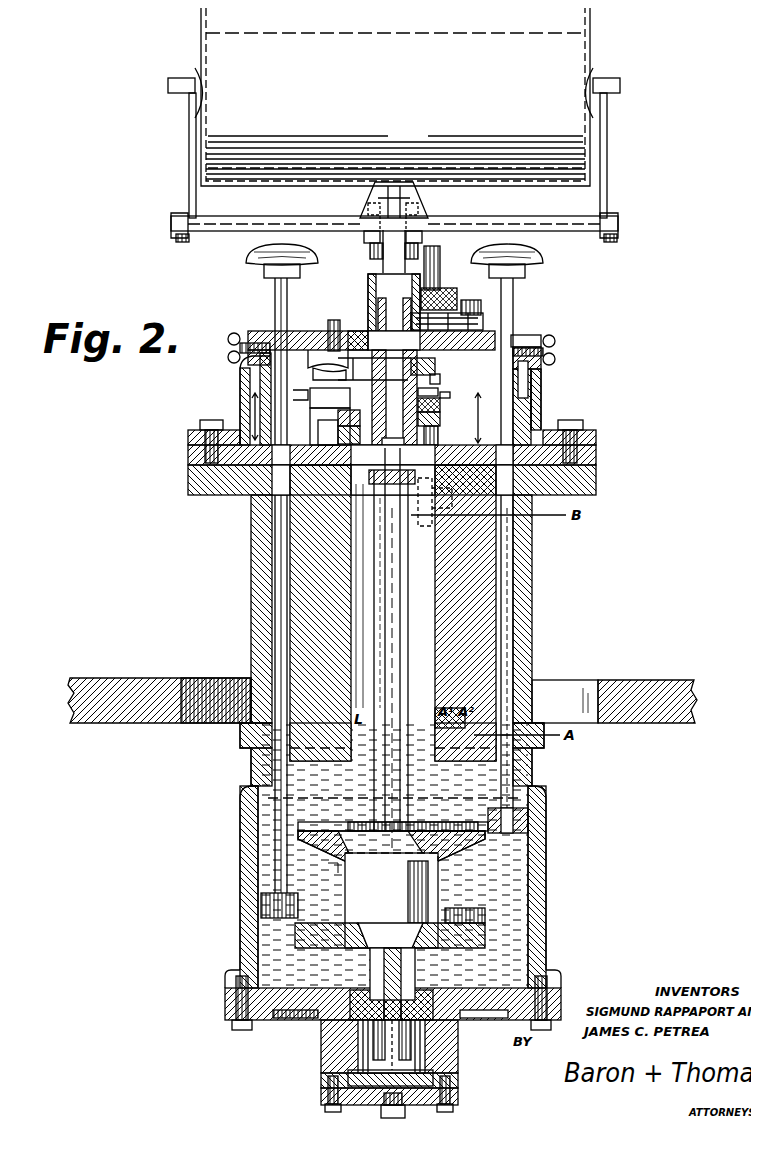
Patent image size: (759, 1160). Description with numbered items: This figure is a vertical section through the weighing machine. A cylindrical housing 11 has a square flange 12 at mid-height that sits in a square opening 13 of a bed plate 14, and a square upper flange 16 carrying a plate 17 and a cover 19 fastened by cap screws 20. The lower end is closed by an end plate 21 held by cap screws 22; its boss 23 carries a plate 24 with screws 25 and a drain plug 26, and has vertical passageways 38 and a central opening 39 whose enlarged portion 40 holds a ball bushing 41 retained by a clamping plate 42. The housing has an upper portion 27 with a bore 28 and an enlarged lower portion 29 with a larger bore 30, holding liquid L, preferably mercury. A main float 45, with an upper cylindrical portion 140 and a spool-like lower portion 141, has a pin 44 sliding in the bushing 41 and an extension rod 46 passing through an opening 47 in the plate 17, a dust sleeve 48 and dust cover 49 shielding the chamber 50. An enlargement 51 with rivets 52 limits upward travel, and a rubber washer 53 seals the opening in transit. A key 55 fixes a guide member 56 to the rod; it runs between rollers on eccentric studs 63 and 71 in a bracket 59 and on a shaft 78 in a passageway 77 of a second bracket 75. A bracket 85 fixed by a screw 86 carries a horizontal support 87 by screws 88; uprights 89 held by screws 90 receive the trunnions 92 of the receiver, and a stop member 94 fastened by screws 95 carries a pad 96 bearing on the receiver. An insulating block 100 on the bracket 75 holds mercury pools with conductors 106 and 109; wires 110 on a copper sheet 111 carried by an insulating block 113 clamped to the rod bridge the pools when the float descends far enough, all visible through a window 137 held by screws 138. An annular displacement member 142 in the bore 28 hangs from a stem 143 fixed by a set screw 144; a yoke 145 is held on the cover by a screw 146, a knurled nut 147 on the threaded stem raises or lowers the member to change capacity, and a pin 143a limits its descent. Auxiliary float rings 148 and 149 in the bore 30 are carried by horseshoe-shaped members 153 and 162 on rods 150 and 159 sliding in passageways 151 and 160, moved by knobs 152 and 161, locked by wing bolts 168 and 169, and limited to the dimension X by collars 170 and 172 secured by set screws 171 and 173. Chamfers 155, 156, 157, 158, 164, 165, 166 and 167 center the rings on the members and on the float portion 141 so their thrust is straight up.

The housing 11 is at (526, 566).
The flange 12 is at (232, 736).
The opening 13 is at (190, 672).
The bed plate 14 is at (660, 674).
The upper flange 16 is at (180, 476).
The plate 17 is at (588, 450).
The cover 19 is at (534, 382).
The cap screws 20 is at (600, 402).
The end plate 21 is at (217, 1000).
The cap screws 22 is at (540, 982).
The cylindrical boss 23 is at (313, 1073).
The plate 24 is at (313, 1088).
The screws 25 is at (318, 1100).
The drain plug 26 is at (374, 1104).
The upper portion 27 is at (246, 650).
The bore 28 is at (292, 780).
The lower portion 29 is at (538, 880).
The bore 30 is at (522, 910).
The vertical passageways 38 is at (355, 1046).
The central opening 39 is at (390, 1078).
The enlarged portion 40 is at (367, 1005).
The ball bushing 41 is at (417, 1005).
The clamping plate 42 is at (322, 1022).
The pin 44 is at (394, 990).
The main float 45 is at (354, 965).
The extension rod 46 is at (388, 520).
The opening 47 is at (423, 502).
The dust sleeve 48 is at (370, 305).
The dust cover 49 is at (360, 282).
The chamber 50 is at (516, 405).
The enlargement 51 is at (359, 596).
The rivets 52 is at (390, 599).
The rubber washer 53 is at (388, 445).
The key 55 is at (383, 397).
The guide member 56 is at (413, 397).
The bracket 59 is at (430, 430).
The studs 63 is at (432, 412).
The stud 71 is at (432, 398).
The second bracket 75 is at (318, 432).
The passageway 77 is at (338, 419).
The shaft 78 is at (342, 435).
The bracket 85 is at (406, 250).
The screw 86 is at (362, 248).
The horizontal support 87 is at (590, 228).
The screws 88 is at (356, 232).
The upright member 89 is at (181, 166).
The screw 90 is at (174, 234).
The trunnion 92 is at (180, 70).
The stop member 94 is at (406, 186).
The screws 95 is at (360, 195).
The pad 96 is at (387, 178).
The insulating block 100 is at (327, 424).
The conductor 106 is at (322, 346).
The conductor 109 is at (300, 342).
The wires 110 is at (330, 398).
The sheet copper 111 is at (348, 328).
The insulating block 113 is at (427, 360).
The transparent window 137 is at (258, 335).
The screws 138 is at (325, 312).
The upper cylindrical portion 140 is at (394, 672).
The lower spool portion 141 is at (420, 878).
The displacement member 142 is at (438, 710).
The stem 143 is at (432, 264).
The pin 143a is at (453, 374).
The set screw 144 is at (436, 498).
The yoke 145 is at (476, 316).
The screw 146 is at (480, 296).
The knurled nut 147 is at (446, 290).
The auxiliary float ring 148 is at (462, 852).
The auxiliary float ring 149 is at (470, 940).
The rod 150 is at (505, 650).
The passageway 151 is at (500, 612).
The knob 152 is at (516, 262).
The horseshoe-shaped member 153 is at (522, 818).
The chamfered corner 155 is at (472, 838).
The chamfered portion 156 is at (470, 816).
The beveled corner 157 is at (312, 852).
The beveled surface 158 is at (330, 866).
The second rod 159 is at (271, 610).
The passageway 160 is at (267, 574).
The knob 161 is at (256, 262).
The horseshoe-shaped member 162 is at (253, 904).
The beveled corner 164 is at (295, 938).
The complemental surface 165 is at (444, 904).
The beveled corner 166 is at (356, 905).
The beveled surface 167 is at (410, 942).
The wing bolt 168 is at (548, 334).
The wing bolt 169 is at (222, 347).
The collar 170 is at (430, 384).
The set screw 171 is at (459, 392).
The collar 172 is at (236, 380).
The set screw 173 is at (306, 398).